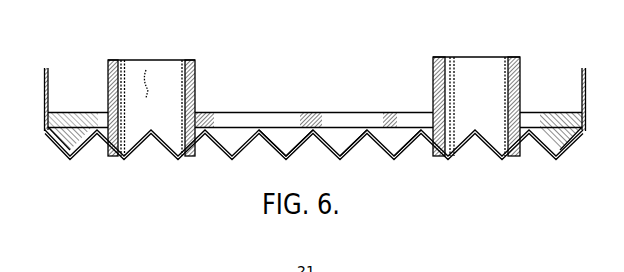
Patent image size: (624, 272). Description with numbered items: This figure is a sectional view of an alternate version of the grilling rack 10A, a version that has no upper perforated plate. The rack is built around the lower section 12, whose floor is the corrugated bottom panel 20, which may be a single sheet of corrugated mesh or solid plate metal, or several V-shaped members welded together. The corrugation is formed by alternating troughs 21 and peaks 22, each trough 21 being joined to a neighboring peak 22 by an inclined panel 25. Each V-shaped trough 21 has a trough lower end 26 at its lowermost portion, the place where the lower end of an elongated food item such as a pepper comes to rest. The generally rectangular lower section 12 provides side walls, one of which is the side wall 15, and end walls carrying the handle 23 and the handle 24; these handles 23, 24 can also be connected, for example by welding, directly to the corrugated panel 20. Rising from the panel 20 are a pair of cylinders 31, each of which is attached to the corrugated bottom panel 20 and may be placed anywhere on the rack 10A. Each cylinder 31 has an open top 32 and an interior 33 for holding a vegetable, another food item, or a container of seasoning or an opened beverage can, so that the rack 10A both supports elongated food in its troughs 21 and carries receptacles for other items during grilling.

The grilling rack 10A is at (128, 27).
The lower section 12 is at (360, 112).
The side wall 15 is at (388, 118).
The corrugated bottom panel 20 is at (218, 142).
The trough 21 is at (292, 150).
The peak 22 is at (205, 130).
The handle 23 is at (584, 68).
The handle 24 is at (46, 68).
The inclined panel 25 is at (408, 143).
The trough lower end 26 is at (357, 146).
The cylinder 31 is at (108, 74).
The open top 32 is at (166, 60).
The interior 33 is at (140, 114).